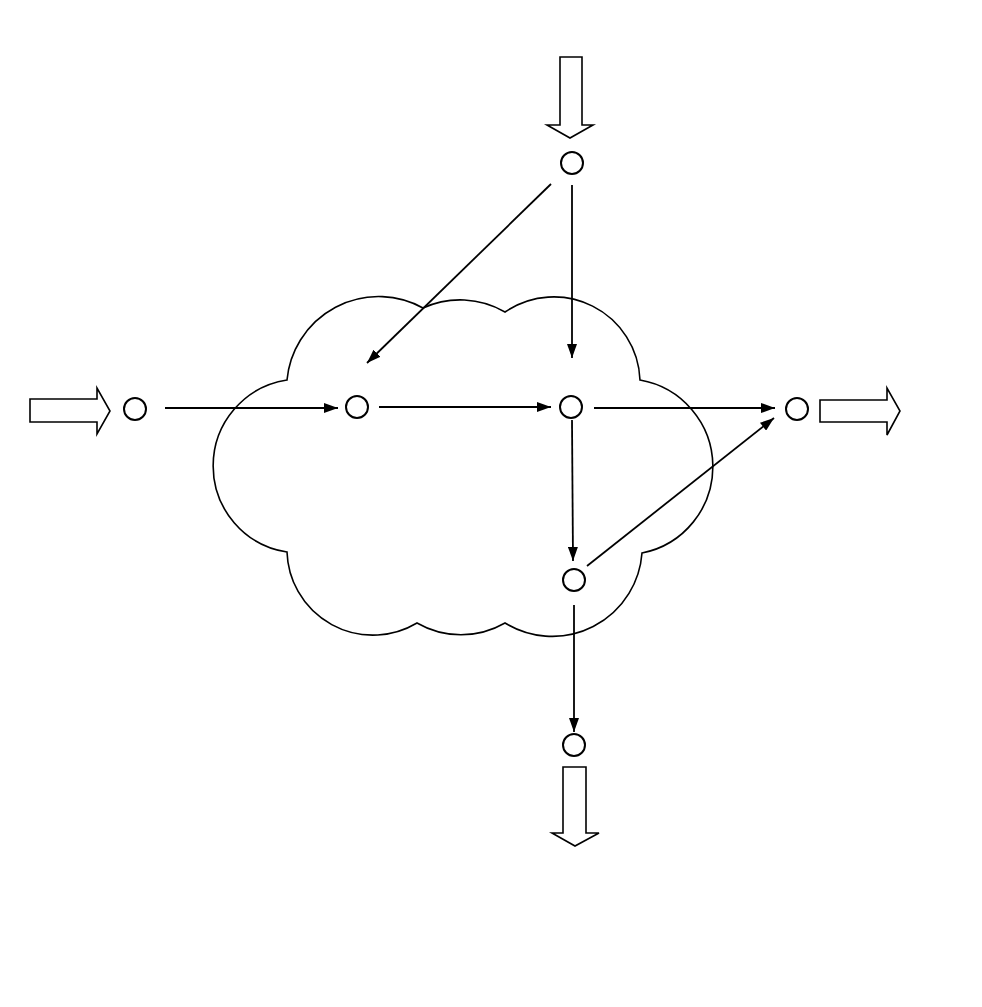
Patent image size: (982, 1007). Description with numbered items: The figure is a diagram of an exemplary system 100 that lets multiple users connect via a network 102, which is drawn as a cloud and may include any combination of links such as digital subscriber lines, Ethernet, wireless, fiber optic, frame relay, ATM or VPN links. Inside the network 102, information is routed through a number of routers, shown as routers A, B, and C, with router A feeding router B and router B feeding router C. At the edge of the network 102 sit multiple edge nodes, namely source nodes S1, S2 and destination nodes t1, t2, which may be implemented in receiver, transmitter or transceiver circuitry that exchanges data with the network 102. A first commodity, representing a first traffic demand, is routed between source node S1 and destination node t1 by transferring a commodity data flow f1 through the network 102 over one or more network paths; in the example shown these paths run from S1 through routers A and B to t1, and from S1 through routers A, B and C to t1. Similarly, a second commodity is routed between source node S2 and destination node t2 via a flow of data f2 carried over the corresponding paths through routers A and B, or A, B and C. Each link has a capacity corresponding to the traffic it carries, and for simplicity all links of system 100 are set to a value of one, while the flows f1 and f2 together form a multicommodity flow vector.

The system 100 is at (260, 72).
The network 102 is at (318, 321).
The source node S1 is at (142, 436).
The source node S2 is at (539, 164).
The router A is at (357, 428).
The router B is at (571, 428).
The router C is at (563, 600).
The destination node t1 is at (797, 436).
The destination node t2 is at (541, 746).
The commodity data flow f1 is at (465, 389).
The flow of data f2 is at (573, 456).